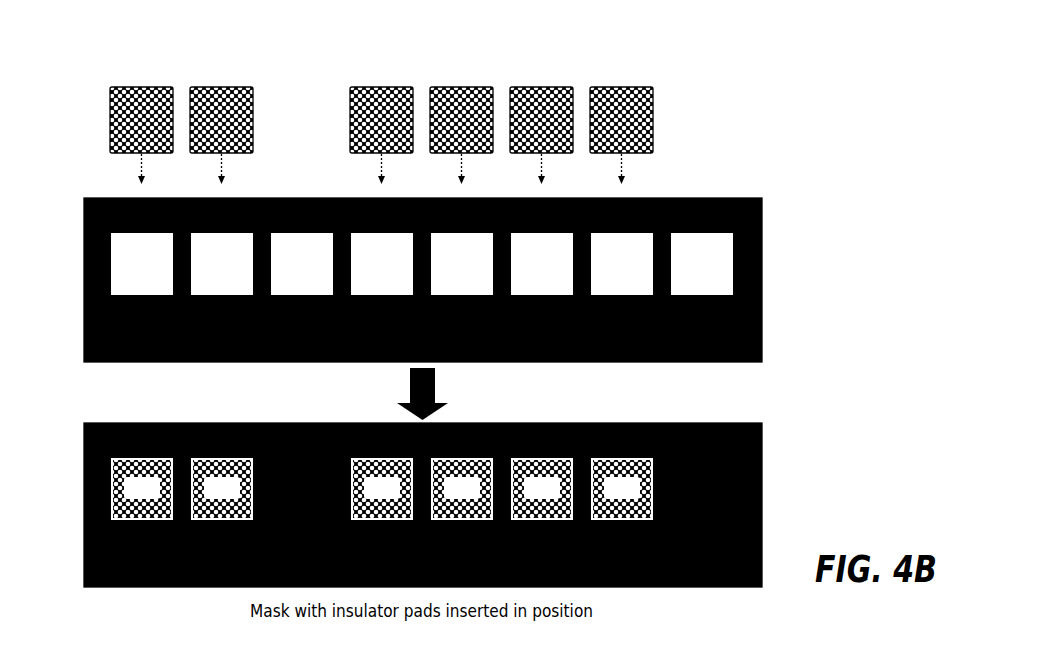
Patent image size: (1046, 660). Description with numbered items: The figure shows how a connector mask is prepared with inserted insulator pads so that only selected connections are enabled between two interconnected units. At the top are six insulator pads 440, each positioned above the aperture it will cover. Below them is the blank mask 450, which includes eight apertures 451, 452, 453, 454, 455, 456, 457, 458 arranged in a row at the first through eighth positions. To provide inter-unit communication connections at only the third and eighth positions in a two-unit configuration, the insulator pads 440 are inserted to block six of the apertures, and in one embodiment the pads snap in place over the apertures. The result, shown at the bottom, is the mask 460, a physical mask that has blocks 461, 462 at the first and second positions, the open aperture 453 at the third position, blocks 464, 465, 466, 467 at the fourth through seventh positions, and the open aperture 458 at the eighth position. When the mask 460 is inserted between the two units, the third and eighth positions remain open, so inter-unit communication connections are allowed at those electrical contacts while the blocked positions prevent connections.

The insulator pads 440 is at (484, 92).
The blank mask 450 is at (506, 243).
The mask 460 is at (502, 467).
The aperture 451 is at (128, 274).
The aperture 452 is at (208, 274).
The open aperture 453 is at (288, 274).
The aperture 454 is at (368, 274).
The aperture 455 is at (448, 274).
The aperture 456 is at (528, 274).
The aperture 457 is at (608, 274).
The open aperture 458 is at (688, 274).
The block 461 is at (128, 497).
The block 462 is at (208, 497).
The block 464 is at (368, 497).
The block 465 is at (448, 497).
The block 466 is at (528, 497).
The block 467 is at (608, 497).